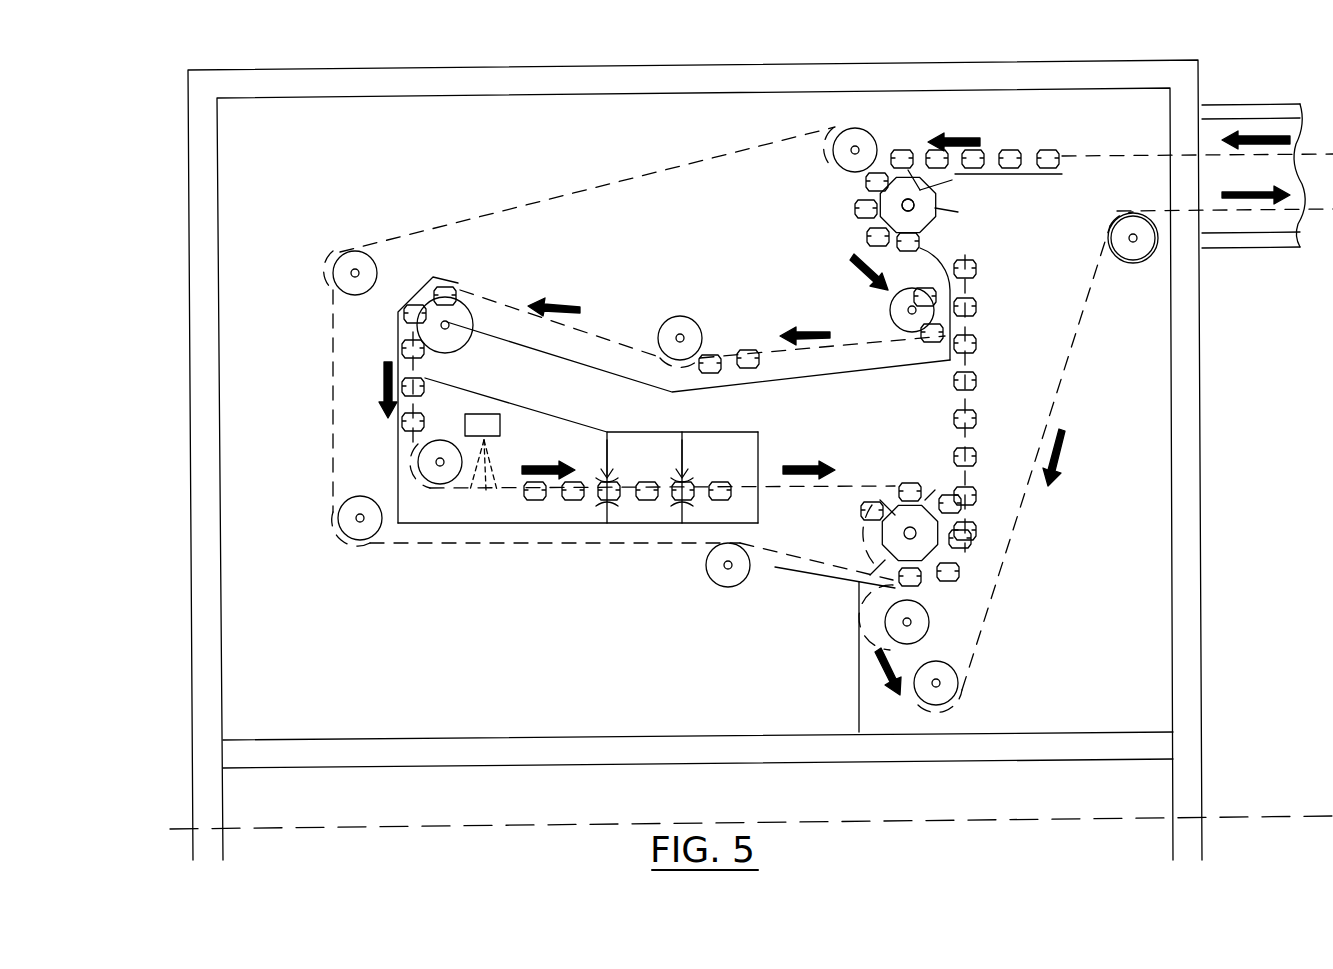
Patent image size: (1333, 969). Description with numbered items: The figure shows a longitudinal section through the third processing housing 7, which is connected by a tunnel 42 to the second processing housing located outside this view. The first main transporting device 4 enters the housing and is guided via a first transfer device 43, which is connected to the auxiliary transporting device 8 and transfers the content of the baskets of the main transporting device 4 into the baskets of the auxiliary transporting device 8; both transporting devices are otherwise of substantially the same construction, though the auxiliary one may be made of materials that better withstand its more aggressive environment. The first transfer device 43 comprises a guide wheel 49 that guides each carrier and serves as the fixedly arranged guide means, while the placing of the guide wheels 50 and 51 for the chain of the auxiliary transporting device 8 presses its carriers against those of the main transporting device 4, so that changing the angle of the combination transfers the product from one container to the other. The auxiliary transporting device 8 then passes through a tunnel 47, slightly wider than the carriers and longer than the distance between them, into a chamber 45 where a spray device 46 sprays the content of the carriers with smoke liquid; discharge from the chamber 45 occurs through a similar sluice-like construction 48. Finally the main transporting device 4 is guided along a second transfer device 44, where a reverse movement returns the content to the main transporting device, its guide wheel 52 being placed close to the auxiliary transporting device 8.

The third processing housing 7 is at (170, 224).
The auxiliary transporting device 8 is at (520, 192).
The first main transporting device 4 is at (1020, 184).
The tunnel 42 is at (1251, 252).
The first transfer device 43 is at (907, 136).
The second transfer device 44 is at (968, 548).
The chamber 45 is at (508, 472).
The spray device 46 is at (483, 420).
The tunnel 47 is at (398, 350).
The sluice-like construction 48 is at (657, 507).
The guide wheel 49 is at (930, 205).
The guide wheel 50 is at (846, 160).
The guide wheel 51 is at (895, 308).
The guide wheel 52 is at (910, 518).